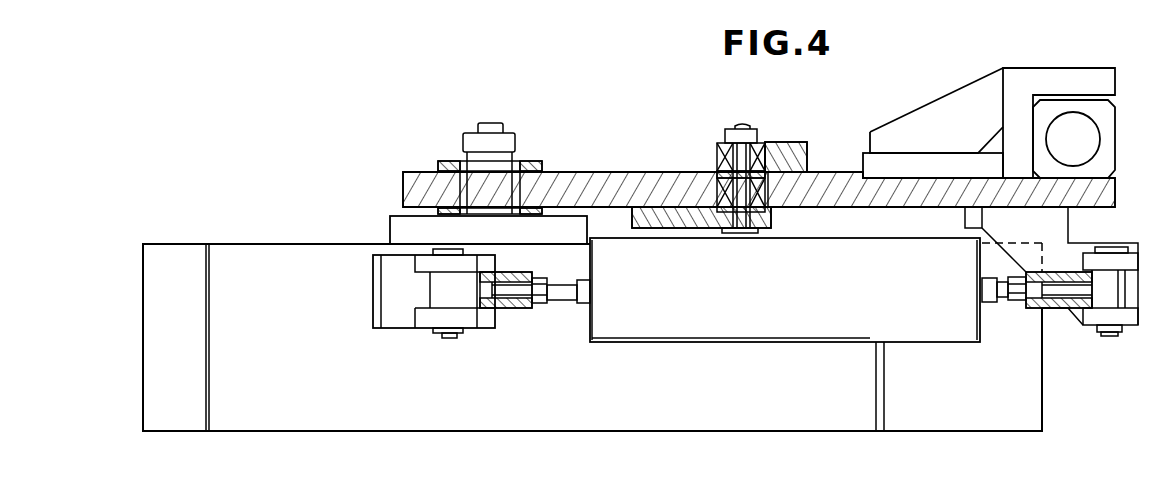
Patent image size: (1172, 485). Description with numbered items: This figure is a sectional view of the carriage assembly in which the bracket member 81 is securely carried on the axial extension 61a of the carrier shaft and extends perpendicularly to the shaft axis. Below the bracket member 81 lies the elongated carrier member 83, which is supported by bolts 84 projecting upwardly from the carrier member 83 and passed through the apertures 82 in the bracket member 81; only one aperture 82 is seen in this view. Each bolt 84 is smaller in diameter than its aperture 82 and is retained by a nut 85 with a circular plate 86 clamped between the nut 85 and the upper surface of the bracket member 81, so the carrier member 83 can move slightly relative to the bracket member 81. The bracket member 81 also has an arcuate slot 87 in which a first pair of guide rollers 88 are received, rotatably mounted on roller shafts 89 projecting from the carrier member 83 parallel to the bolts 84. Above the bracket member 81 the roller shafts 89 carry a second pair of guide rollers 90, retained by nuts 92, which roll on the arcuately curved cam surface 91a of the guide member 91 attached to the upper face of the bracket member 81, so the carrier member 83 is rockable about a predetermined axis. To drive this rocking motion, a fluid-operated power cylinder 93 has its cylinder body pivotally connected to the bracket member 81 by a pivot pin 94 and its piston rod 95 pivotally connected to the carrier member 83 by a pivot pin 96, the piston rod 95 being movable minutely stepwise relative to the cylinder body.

The axial extension 61a is at (1100, 131).
The bracket member 81 is at (1115, 191).
The aperture 82 is at (467, 196).
The carrier member 83 is at (676, 400).
The bolt 84 is at (512, 189).
The nut 85 is at (504, 140).
The circular plate 86 is at (516, 162).
The arcuate slot 87 is at (770, 191).
The first guide roller 88 is at (717, 186).
The roller shaft 89 is at (738, 126).
The second guide roller 90 is at (717, 157).
The guide member 91 is at (808, 151).
The cam surface 91a is at (766, 150).
The nut 92 is at (725, 137).
The fluid-operated power cylinder 93 is at (801, 345).
The pivot pin 94 is at (1110, 337).
The piston rod 95 is at (580, 305).
The pivot pin 96 is at (452, 340).